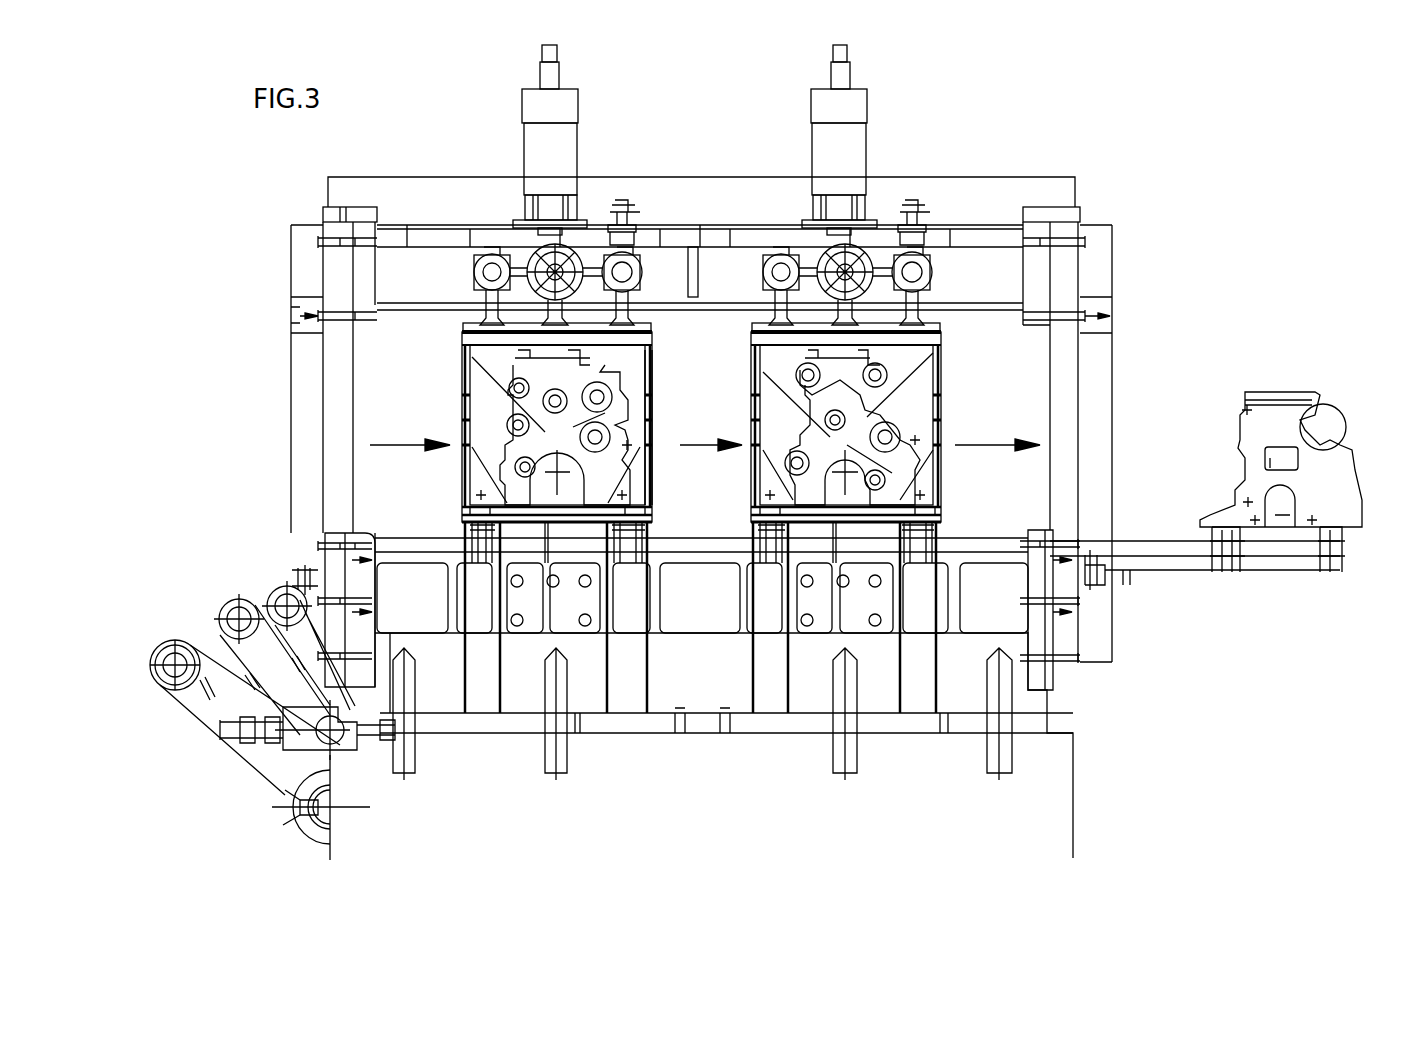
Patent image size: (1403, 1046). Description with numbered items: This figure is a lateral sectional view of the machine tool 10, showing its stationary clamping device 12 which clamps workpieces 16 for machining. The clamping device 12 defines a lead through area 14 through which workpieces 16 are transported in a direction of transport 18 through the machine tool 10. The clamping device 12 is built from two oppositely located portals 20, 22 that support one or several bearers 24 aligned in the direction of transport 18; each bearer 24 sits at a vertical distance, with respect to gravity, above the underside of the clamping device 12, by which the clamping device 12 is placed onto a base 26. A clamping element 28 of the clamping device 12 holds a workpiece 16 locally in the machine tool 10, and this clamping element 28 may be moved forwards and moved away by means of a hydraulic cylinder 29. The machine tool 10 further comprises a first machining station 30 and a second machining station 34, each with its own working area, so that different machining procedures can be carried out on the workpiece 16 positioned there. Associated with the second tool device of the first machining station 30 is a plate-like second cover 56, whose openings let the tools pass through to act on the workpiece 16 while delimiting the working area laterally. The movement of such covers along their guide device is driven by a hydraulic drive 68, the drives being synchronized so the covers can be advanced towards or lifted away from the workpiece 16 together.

The machine tool 10 is at (912, 118).
The clamping device 12 is at (688, 675).
The lead through area 14 is at (425, 373).
The workpiece 16 is at (470, 475).
The direction of transport 18 is at (680, 445).
The portal 20 is at (307, 420).
The portal 22 is at (1100, 400).
The bearer 24 is at (1013, 268).
The base 26 is at (680, 230).
The clamping element 28 is at (640, 312).
The hydraulic cylinder 29 is at (530, 143).
The first machining station 30 is at (475, 800).
The second machining station 34 is at (941, 804).
The second cover 56 is at (652, 372).
The hydraulic drive 68 is at (575, 255).